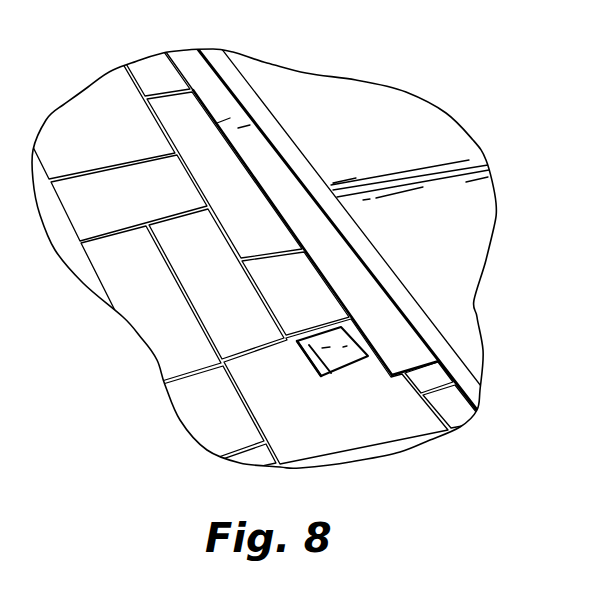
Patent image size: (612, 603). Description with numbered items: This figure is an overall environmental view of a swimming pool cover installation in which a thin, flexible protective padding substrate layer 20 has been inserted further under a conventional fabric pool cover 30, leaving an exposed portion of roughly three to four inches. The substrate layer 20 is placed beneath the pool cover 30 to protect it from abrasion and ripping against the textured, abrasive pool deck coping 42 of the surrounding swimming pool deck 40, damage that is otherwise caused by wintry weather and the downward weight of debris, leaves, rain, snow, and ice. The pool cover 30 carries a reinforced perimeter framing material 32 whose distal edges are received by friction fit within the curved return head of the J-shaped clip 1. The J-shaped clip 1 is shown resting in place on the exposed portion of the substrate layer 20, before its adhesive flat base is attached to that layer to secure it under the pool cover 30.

The protective substrate layer 20 is at (188, 63).
The fabric pool cover 30 is at (379, 133).
The reinforced perimeter framing material 32 is at (427, 332).
The J-shaped clip 1 is at (295, 348).
The swimming pool deck 40 is at (355, 426).
The pool deck coping 42 is at (423, 407).